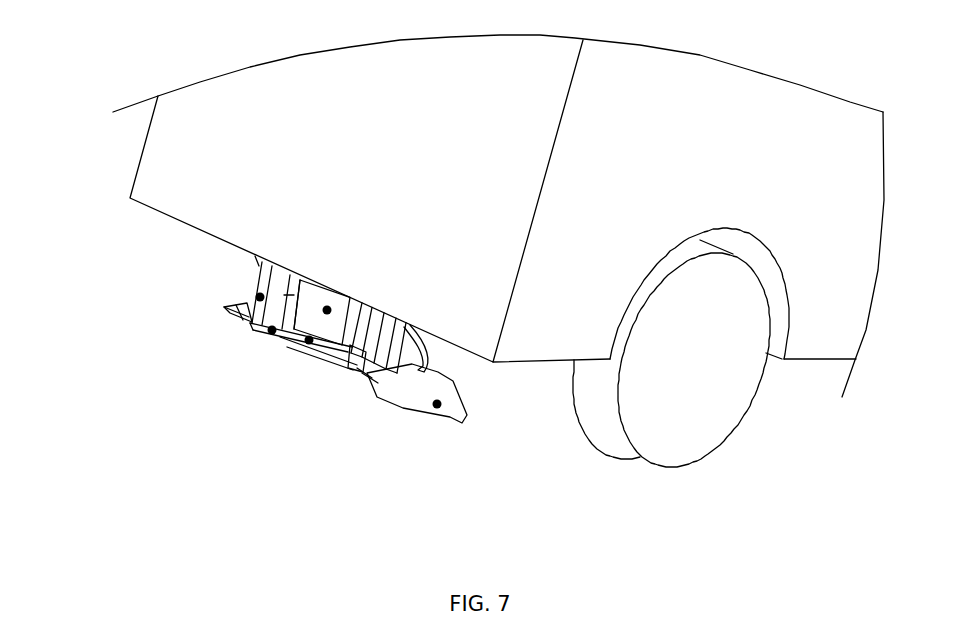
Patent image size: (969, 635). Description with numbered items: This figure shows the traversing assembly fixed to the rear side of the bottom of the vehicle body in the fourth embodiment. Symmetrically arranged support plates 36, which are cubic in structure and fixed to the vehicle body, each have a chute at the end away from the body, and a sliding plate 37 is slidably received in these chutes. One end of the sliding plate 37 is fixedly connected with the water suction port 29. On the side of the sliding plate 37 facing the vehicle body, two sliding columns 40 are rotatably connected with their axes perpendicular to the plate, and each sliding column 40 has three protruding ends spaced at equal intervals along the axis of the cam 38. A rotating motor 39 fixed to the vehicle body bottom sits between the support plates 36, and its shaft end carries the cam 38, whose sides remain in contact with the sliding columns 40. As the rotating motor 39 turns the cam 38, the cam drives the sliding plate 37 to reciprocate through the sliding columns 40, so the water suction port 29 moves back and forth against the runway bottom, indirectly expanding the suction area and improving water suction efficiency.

The water suction port 29 is at (486, 441).
The support plate 36 is at (198, 319).
The sliding plate 37 is at (206, 416).
The cam 38 is at (277, 416).
The rotating motor 39 is at (354, 416).
The sliding column 40 is at (435, 425).